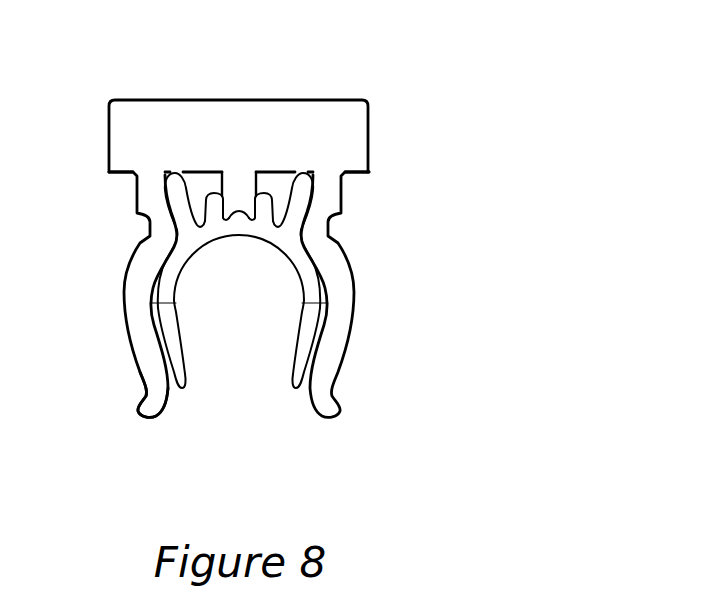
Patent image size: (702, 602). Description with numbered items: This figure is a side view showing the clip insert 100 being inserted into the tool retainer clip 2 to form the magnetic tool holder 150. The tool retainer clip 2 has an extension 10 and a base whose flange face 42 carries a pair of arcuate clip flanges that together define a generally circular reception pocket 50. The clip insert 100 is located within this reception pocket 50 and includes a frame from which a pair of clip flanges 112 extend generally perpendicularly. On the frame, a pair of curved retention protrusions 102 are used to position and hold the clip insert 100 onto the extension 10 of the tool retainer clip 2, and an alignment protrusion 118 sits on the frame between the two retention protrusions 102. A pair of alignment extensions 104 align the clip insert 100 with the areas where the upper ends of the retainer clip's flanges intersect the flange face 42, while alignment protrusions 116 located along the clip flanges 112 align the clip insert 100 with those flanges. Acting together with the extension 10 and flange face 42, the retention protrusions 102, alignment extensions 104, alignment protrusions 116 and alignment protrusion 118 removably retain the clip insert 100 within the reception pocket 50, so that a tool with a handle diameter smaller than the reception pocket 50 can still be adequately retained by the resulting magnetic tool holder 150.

The tool retainer clip 2 is at (86, 58).
The extension 10 is at (237, 195).
The flange face 42 is at (368, 163).
The reception pocket 50 is at (156, 452).
The clip insert 100 is at (289, 467).
The retention protrusions 102 is at (214, 193).
The alignment extensions 104 is at (171, 183).
The clip flanges 112 is at (297, 343).
The alignment protrusions 116 is at (124, 312).
The alignment protrusion 118 is at (239, 222).
The magnetic tool holder 150 is at (498, 197).